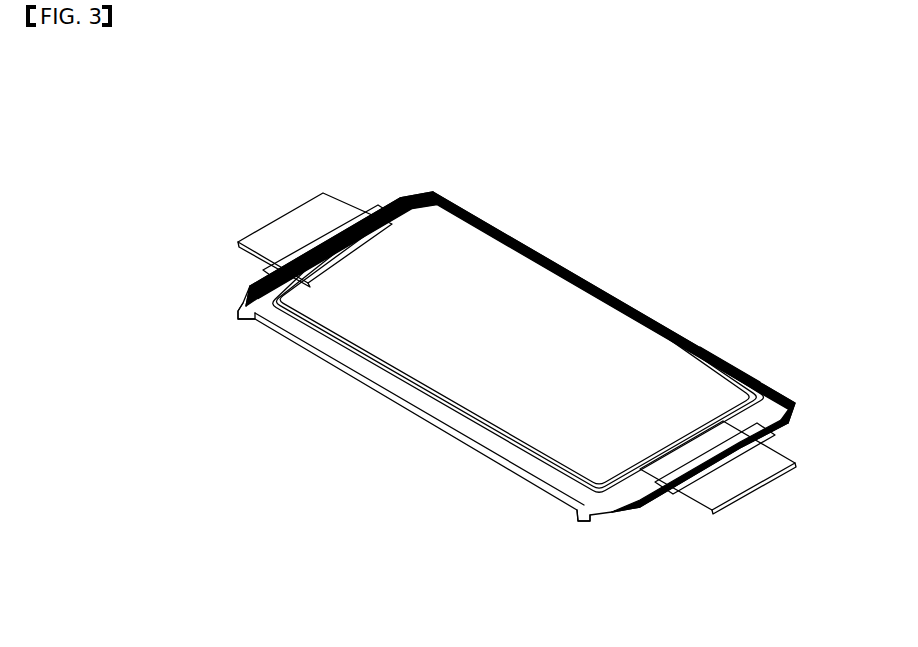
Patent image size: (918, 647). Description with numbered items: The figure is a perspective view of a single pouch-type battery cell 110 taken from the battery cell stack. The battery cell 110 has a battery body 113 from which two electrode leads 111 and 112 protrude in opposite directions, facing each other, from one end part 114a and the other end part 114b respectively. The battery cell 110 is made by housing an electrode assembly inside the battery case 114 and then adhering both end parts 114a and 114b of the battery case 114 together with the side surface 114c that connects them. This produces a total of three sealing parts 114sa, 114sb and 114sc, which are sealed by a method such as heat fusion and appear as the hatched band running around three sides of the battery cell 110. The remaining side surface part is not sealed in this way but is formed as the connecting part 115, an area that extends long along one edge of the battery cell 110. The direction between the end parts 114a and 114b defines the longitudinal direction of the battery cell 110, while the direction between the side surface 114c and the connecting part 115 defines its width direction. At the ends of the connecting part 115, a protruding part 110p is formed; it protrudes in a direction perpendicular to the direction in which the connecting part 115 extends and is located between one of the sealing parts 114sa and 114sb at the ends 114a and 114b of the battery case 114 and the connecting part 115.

The battery cell 110 is at (197, 90).
The protruding part 110p is at (242, 313).
The electrode lead 111 is at (300, 218).
The electrode lead 112 is at (757, 487).
The battery body 113 is at (525, 285).
The battery case 114 is at (786, 392).
The one end part 114a is at (412, 207).
The other end part 114b is at (620, 500).
The side surface 114c is at (619, 301).
The sealing part 114sa is at (388, 206).
The sealing part 114sb is at (778, 426).
The sealing part 114sc is at (715, 355).
The connecting part 115 is at (447, 417).